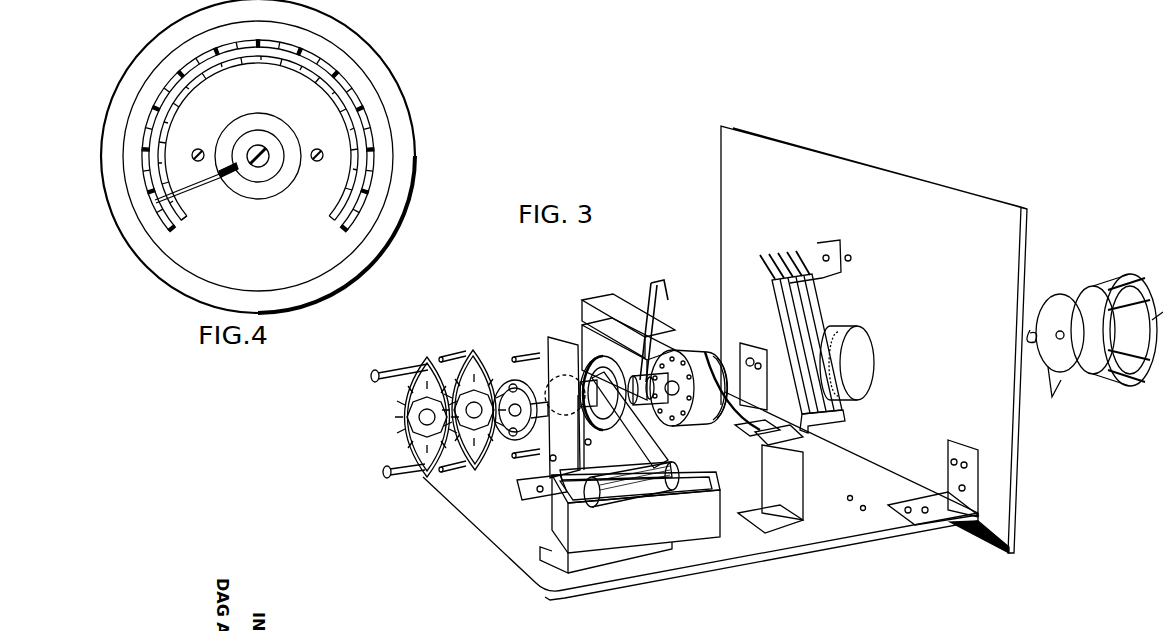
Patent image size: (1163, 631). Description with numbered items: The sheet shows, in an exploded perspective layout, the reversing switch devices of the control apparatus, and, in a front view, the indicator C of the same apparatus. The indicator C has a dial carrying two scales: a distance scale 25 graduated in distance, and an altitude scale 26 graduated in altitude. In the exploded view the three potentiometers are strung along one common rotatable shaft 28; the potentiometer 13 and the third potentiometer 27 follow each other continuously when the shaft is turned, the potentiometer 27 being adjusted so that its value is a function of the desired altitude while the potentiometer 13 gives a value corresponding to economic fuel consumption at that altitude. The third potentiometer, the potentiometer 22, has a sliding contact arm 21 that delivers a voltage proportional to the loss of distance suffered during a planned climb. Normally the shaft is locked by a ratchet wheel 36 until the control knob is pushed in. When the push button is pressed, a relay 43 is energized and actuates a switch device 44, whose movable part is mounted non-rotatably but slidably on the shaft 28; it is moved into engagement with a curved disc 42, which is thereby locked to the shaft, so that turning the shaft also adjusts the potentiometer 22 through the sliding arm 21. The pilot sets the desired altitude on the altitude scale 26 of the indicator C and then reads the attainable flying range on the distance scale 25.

In FIG. 3, the potentiometer 13 is at (430, 360).
In FIG. 3, the third potentiometer 27 is at (476, 356).
In FIG. 3, the potentiometer 22 is at (613, 310).
In FIG. 3, the sliding contact arm 21 is at (630, 349).
In FIG. 3, the shaft 28 is at (648, 389).
In FIG. 3, the switch device 44 is at (640, 414).
In FIG. 3, the curved disc 42 is at (707, 430).
In FIG. 3, the relay 43 is at (633, 490).
In FIG. 3, the ratchet wheel 36 is at (827, 332).
In FIG. 4, the distance scale 25 is at (168, 170).
In FIG. 4, the altitude scale 26 is at (363, 184).
In FIG. 4, the indicator C is at (415, 125).